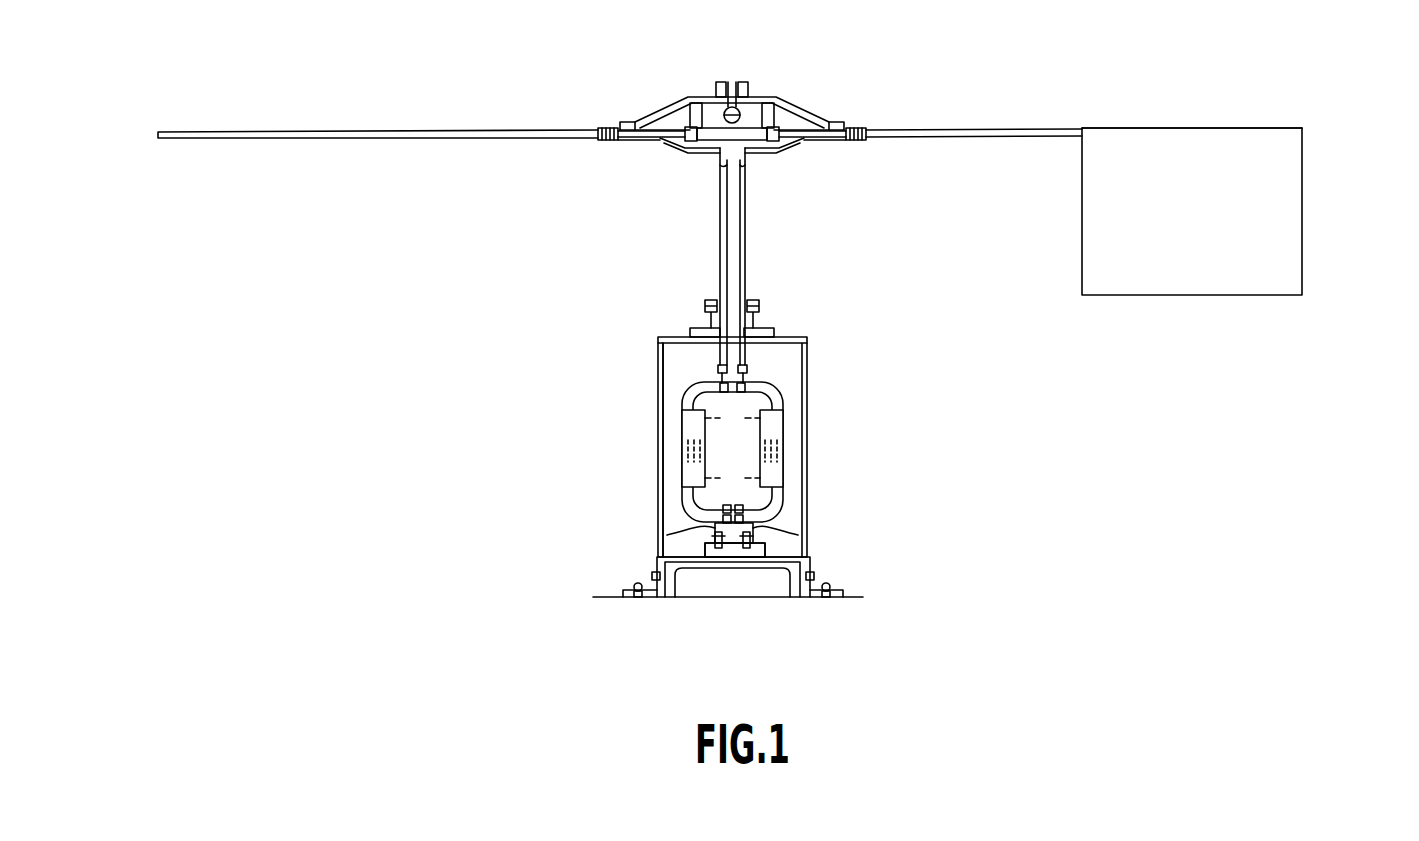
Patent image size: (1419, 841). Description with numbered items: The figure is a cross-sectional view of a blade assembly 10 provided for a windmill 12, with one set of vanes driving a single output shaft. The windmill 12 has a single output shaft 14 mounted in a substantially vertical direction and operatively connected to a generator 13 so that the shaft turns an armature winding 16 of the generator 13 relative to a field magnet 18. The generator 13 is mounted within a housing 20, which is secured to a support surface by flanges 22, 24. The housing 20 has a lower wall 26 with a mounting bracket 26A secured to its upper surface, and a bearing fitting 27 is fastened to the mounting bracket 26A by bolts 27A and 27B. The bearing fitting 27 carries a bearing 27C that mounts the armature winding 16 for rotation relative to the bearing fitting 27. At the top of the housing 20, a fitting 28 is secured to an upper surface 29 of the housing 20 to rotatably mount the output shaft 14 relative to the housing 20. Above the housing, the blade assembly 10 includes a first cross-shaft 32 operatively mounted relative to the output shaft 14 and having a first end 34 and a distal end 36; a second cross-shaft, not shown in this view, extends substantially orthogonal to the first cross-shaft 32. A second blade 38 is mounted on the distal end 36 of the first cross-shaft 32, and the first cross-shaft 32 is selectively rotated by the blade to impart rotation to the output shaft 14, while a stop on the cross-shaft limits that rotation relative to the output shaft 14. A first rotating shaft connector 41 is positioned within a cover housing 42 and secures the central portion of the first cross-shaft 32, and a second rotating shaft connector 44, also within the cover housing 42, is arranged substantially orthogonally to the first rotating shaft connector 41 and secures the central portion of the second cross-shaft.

The blade assembly 10 is at (452, 168).
The windmill 12 is at (548, 302).
The generator 13 is at (660, 470).
The output shaft 14 is at (746, 228).
The armature winding 16 is at (776, 403).
The field magnet 18 is at (768, 457).
The housing 20 is at (810, 330).
The flange 22 is at (822, 598).
The flange 24 is at (645, 598).
The lower wall 26 is at (792, 540).
The mounting bracket 26A is at (727, 550).
The bearing fitting 27 is at (748, 525).
The bolt 27A is at (748, 548).
The bolt 27B is at (715, 541).
The bearing 27C is at (723, 517).
The fitting 28 is at (757, 333).
The upper surface 29 is at (683, 337).
The first cross-shaft 32 is at (955, 129).
The first end 34 is at (158, 134).
The distal end 36 is at (1303, 128).
The second blade 38 is at (1275, 211).
The first rotating shaft connector 41 is at (757, 132).
The cover housing 42 is at (822, 100).
The second rotating shaft connector 44 is at (727, 108).